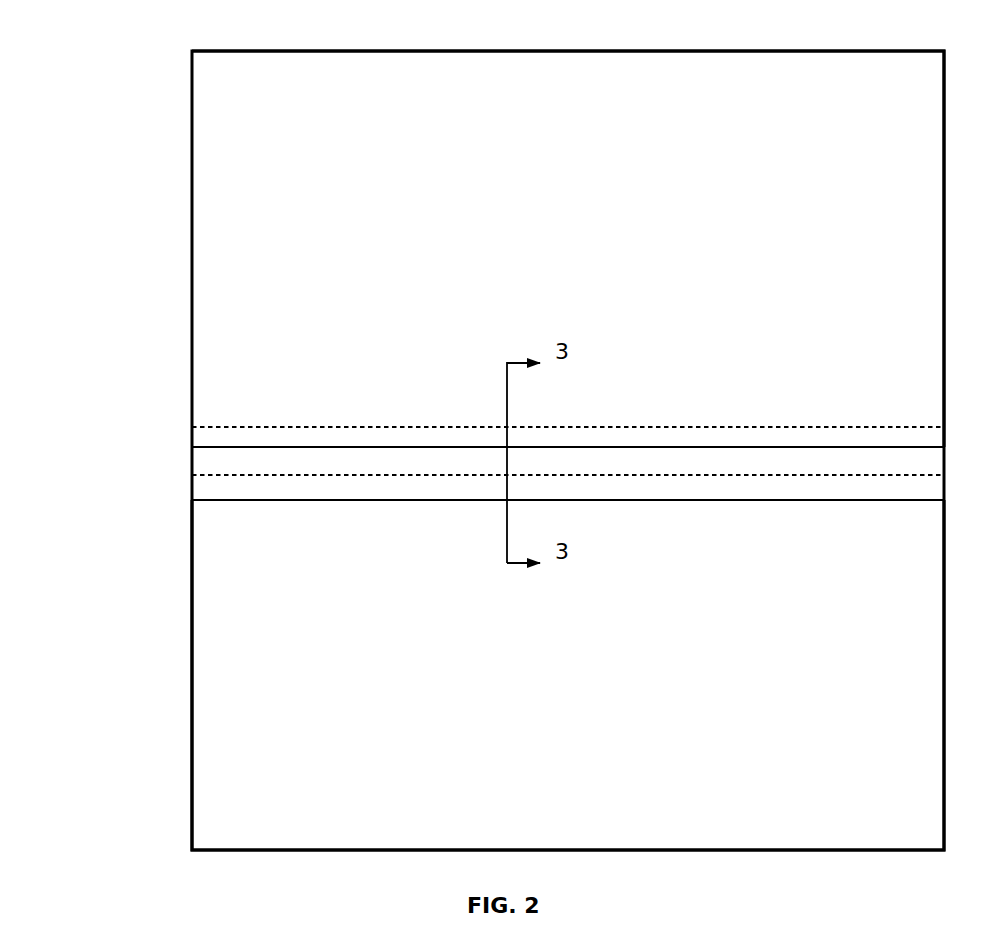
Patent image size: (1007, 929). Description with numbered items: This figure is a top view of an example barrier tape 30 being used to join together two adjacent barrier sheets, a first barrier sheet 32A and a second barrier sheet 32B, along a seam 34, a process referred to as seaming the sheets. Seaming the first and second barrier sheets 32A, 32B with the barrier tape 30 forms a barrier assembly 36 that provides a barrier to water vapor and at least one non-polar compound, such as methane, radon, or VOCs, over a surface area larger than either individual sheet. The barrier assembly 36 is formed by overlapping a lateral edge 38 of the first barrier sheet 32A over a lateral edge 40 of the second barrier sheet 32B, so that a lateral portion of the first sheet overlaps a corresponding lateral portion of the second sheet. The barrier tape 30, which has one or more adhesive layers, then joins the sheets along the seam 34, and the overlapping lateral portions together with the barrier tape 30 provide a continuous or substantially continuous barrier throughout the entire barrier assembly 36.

The barrier assembly 36 is at (131, 69).
The first barrier sheet 32A is at (227, 288).
The second barrier sheet 32B is at (224, 684).
The seam 34 is at (509, 462).
The barrier tape 30 is at (405, 490).
The lateral edge of the second barrier sheet 40 is at (736, 426).
The lateral edge of the first barrier sheet 38 is at (716, 476).